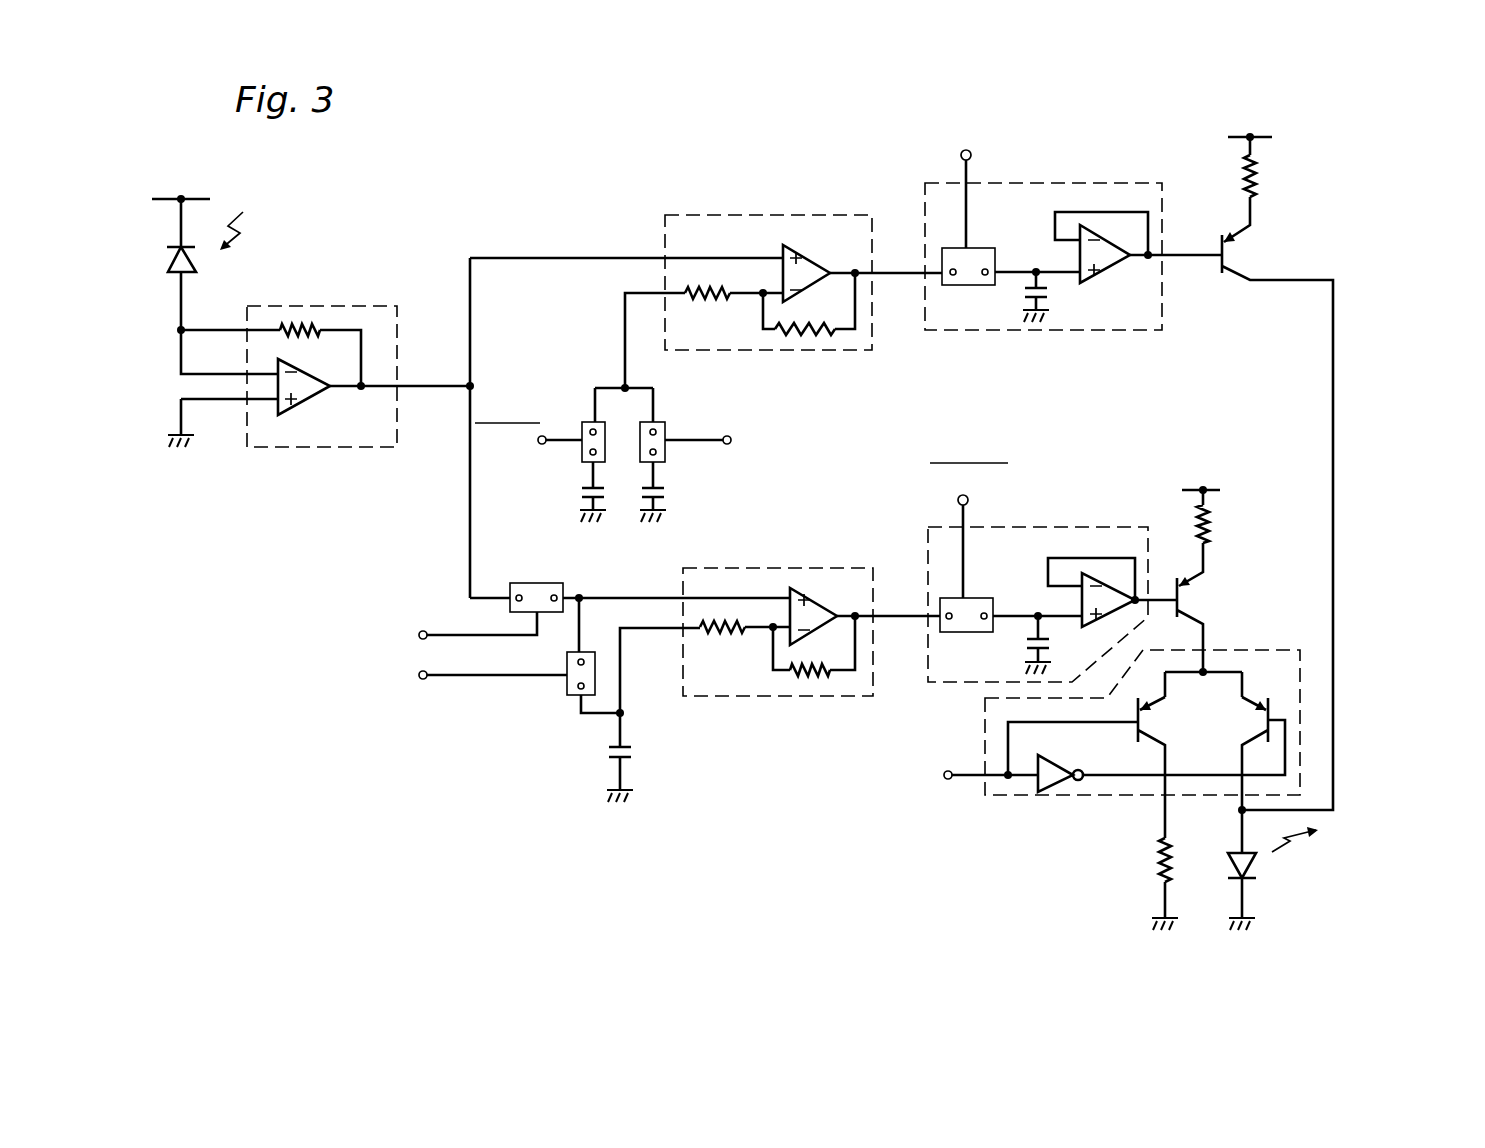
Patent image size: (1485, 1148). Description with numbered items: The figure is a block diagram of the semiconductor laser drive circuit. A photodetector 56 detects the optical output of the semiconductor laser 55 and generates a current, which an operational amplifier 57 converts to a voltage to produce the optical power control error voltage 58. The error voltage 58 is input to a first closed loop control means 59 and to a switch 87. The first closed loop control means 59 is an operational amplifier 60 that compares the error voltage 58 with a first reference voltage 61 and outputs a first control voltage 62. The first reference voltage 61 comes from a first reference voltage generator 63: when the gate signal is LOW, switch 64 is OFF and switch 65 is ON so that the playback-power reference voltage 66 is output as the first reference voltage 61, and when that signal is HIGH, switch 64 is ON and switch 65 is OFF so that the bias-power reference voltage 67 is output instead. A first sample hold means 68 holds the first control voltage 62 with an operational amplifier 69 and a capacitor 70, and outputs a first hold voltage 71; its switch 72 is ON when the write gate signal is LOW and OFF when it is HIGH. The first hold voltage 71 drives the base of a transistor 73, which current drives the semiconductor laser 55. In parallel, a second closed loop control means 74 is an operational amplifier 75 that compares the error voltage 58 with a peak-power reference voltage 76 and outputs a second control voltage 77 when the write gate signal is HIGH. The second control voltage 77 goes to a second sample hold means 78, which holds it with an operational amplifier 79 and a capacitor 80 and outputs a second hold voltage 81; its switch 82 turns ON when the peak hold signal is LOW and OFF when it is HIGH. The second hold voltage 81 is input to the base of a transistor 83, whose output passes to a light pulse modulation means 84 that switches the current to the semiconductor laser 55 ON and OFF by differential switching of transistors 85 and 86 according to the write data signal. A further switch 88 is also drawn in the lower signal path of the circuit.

The semiconductor laser 55 is at (1275, 885).
The photodetector 56 is at (176, 258).
The operational amplifier 57 is at (290, 405).
The optical power control error voltage PDER 58 is at (425, 390).
The first closed loop control means 59 is at (768, 248).
The operational amplifier 60 is at (800, 262).
The first reference voltage V1 61 is at (585, 328).
The first control voltage SV1 62 is at (893, 305).
The first reference voltage generator 63 is at (578, 418).
The switch 64 is at (666, 425).
The switch 65 is at (600, 463).
The reference voltage VP 66 is at (558, 491).
The reference voltage VB 67 is at (708, 487).
The first sample hold means 68 is at (1046, 266).
The operational amplifier 69 is at (1100, 270).
The capacitor 70 is at (1048, 300).
The first hold voltage HD1 71 is at (1185, 285).
The switch 72 is at (963, 290).
The transistor 73 is at (1235, 275).
The second closed loop control means 74 is at (730, 591).
The operational amplifier 75 is at (820, 605).
The reference voltage VP 76 is at (670, 758).
The second control voltage SV2 77 is at (888, 645).
The second sample hold means 78 is at (1038, 571).
The operational amplifier 79 is at (1095, 585).
The capacitor 80 is at (1053, 645).
The second hold voltage HD2 81 is at (1178, 565).
The switch 82 is at (963, 632).
The transistor 83 is at (1190, 607).
The light pulse modulation means 84 is at (1136, 759).
The transistor 85 is at (1160, 725).
The transistor 86 is at (1270, 715).
The switch 87 is at (530, 583).
The switch 88 is at (572, 695).